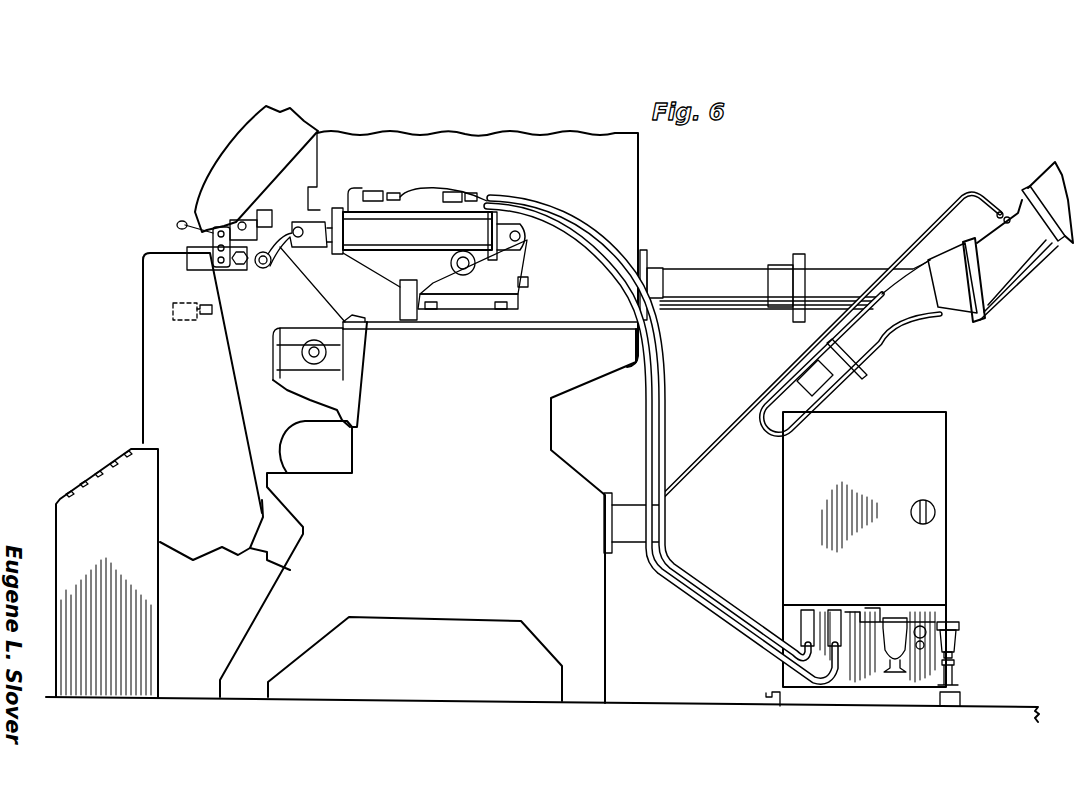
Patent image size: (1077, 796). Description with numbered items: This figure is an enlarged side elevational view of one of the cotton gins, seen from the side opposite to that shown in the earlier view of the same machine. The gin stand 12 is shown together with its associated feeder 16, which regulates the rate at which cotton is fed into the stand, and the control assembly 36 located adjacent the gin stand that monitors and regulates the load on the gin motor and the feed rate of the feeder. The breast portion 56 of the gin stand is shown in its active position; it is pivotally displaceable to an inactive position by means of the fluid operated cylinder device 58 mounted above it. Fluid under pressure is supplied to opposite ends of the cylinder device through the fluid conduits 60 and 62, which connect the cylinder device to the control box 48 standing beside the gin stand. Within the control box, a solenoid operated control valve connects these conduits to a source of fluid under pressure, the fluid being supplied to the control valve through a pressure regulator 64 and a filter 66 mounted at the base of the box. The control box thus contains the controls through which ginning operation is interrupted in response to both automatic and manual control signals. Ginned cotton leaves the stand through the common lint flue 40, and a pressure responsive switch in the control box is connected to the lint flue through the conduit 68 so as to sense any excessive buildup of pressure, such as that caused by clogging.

The gin stand 12 is at (506, 662).
The feeder 16 is at (237, 120).
The control assembly 36 is at (46, 522).
The lint flue 40 is at (1045, 165).
The control box 48 is at (957, 458).
The breast portion 56 is at (135, 385).
The fluid operated cylinder device 58 is at (404, 188).
The fluid conduit 60 is at (728, 588).
The fluid conduit 62 is at (712, 603).
The pressure regulator 64 is at (950, 644).
The filter 66 is at (892, 640).
The conduit 68 is at (915, 240).